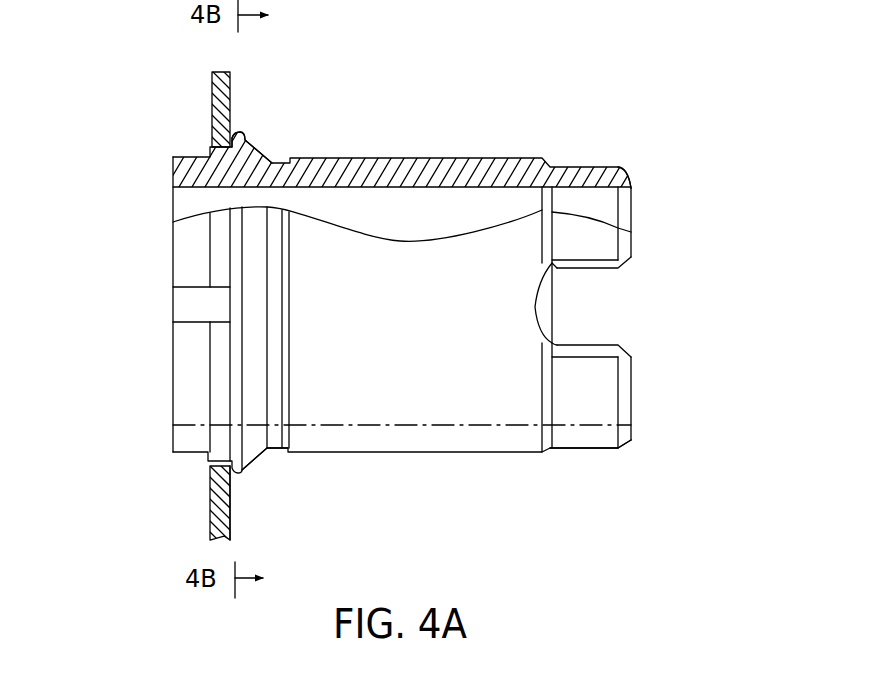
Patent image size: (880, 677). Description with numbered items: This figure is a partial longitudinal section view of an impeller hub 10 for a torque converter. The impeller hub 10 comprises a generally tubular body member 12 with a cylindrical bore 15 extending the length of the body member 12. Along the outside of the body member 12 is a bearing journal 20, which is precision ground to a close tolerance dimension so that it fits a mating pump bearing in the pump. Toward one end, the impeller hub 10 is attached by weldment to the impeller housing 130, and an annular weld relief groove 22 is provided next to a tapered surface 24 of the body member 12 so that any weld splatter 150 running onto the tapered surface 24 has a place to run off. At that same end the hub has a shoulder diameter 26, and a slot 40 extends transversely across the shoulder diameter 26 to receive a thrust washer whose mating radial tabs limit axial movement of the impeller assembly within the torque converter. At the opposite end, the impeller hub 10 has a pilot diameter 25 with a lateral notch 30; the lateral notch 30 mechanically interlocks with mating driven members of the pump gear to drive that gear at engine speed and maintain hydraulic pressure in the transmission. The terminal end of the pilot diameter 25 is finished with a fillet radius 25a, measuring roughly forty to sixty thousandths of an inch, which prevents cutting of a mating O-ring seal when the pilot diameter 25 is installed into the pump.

The impeller hub 10 is at (422, 96).
The body member 12 is at (503, 160).
The cylindrical bore 15 is at (193, 200).
The bearing journal 20 is at (410, 461).
The annular weld relief groove 22 is at (273, 448).
The tapered surface 24 is at (252, 148).
The pilot diameter 25 is at (585, 449).
The fillet radius 25a is at (630, 162).
The shoulder diameter 26 is at (207, 154).
The lateral notch 30 is at (607, 270).
The slot 40 is at (183, 298).
The impeller housing 130 is at (198, 502).
The weld splatter 150 is at (232, 475).